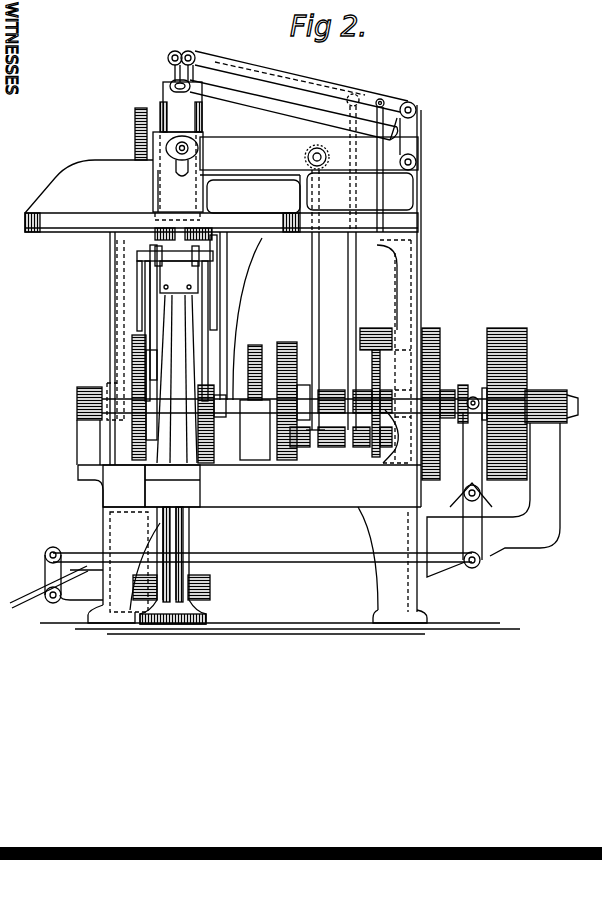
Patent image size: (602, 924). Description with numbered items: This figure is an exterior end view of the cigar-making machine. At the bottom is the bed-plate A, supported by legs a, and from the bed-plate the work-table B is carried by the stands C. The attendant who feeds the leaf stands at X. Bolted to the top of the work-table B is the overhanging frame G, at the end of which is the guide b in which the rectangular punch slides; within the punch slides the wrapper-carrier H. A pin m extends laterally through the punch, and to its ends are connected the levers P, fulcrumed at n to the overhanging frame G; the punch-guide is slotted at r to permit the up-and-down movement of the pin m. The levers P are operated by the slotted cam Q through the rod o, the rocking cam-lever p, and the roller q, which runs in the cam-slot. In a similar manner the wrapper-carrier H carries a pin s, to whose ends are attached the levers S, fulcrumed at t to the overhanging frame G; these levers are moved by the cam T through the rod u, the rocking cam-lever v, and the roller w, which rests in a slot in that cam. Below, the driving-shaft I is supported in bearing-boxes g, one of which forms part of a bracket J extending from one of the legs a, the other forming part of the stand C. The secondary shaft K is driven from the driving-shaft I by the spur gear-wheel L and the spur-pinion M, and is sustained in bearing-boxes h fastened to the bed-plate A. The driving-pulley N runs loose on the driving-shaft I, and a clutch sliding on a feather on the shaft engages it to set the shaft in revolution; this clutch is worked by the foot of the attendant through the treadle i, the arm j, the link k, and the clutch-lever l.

The work-table B is at (85, 218).
The wrapper-carrier H is at (178, 151).
The guide b is at (156, 180).
The pin s is at (168, 82).
The levers S is at (250, 96).
The fulcrum t is at (412, 117).
The fulcrum n is at (417, 162).
The pin m is at (200, 140).
The slot r is at (183, 176).
The levers P is at (309, 156).
The overhanging frame G is at (310, 201).
The stand C is at (108, 280).
The slotted cam Q is at (286, 342).
The rod u is at (347, 275).
The rod o is at (320, 307).
The bearing-boxes h is at (80, 386).
The secondary shaft K is at (325, 390).
The cam T is at (366, 372).
The roller q is at (298, 484).
The spur gear-wheel L is at (440, 348).
The driving-pulley N is at (500, 328).
The spur-pinion M is at (446, 390).
The bearing-boxes g is at (540, 390).
The driving-shaft I is at (578, 406).
The bed-plate A is at (249, 486).
The rocking cam-lever p is at (306, 470).
The roller w is at (347, 470).
The rocking cam-lever v is at (355, 470).
The legs a is at (257, 565).
The attendant's position X is at (271, 568).
The link k is at (270, 553).
The treadle i is at (38, 590).
The arm j is at (49, 581).
The bracket J is at (561, 490).
The clutch-lever l is at (482, 535).